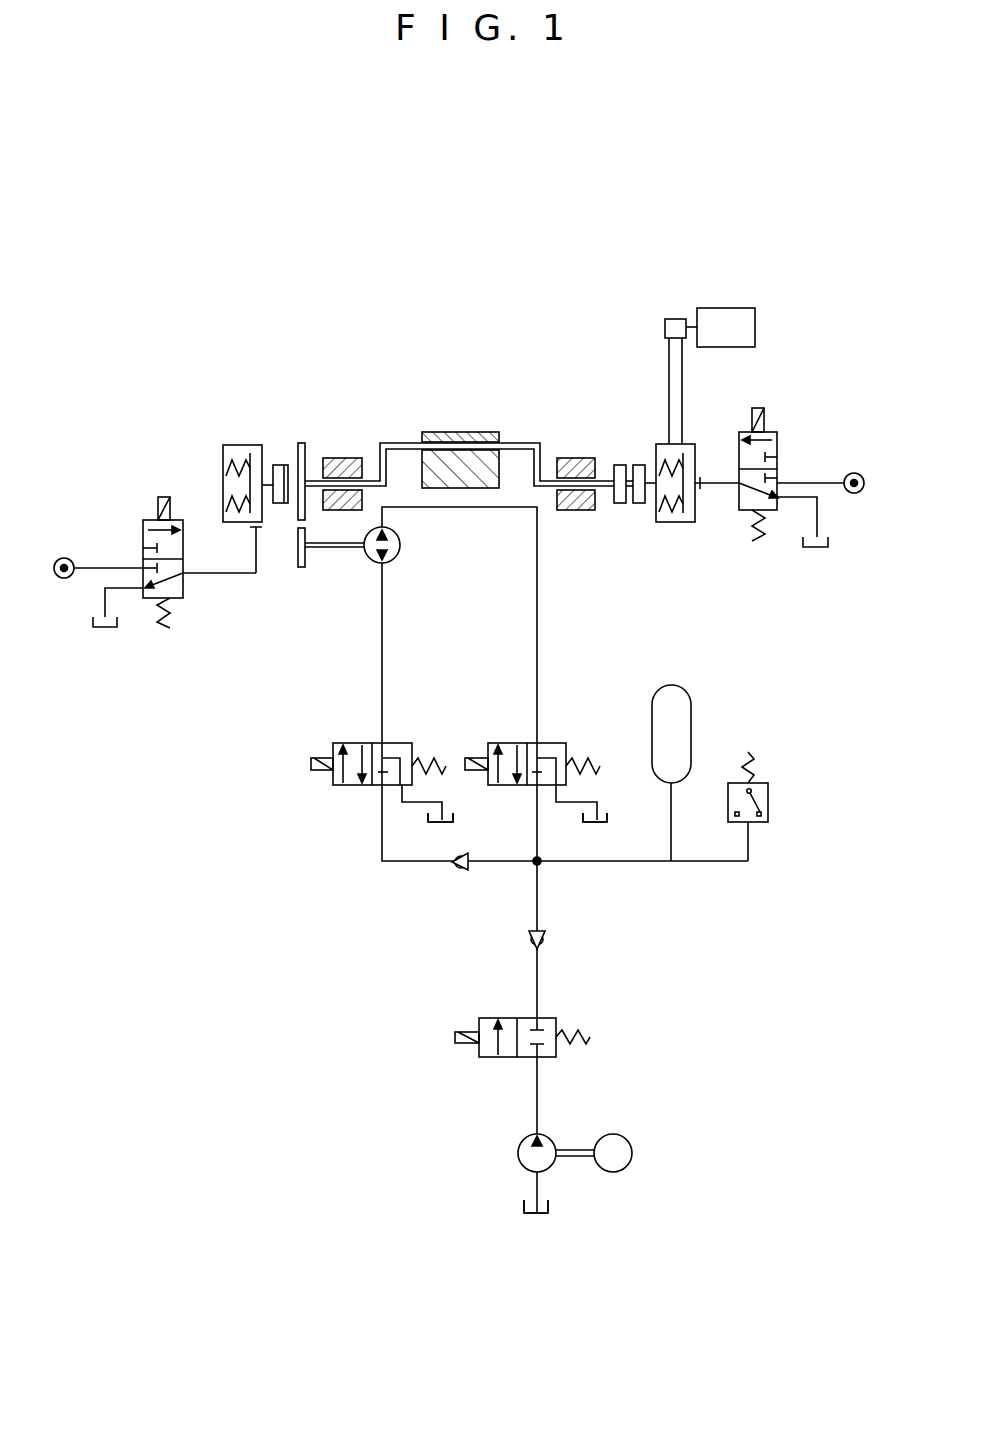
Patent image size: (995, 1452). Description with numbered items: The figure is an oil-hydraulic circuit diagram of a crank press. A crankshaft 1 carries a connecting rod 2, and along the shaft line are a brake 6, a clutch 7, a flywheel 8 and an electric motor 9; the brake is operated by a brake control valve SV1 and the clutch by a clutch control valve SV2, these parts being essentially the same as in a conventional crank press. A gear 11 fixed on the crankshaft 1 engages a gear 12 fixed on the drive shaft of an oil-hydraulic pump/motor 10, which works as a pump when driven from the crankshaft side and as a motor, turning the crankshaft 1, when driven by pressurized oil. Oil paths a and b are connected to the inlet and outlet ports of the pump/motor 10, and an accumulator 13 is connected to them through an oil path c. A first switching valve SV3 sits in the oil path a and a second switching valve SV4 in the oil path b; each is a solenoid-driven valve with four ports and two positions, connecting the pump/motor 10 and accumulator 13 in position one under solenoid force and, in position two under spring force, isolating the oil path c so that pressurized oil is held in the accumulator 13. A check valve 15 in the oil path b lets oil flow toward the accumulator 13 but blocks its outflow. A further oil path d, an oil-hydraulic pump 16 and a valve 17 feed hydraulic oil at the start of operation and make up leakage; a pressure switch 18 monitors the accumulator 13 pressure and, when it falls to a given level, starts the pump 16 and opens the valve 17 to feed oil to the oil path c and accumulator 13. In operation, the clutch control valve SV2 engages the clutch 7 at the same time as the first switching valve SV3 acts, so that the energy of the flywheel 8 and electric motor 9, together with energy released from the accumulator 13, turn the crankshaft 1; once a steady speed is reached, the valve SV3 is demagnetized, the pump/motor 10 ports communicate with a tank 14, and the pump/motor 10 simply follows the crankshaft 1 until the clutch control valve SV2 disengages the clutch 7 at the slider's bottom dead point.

The crankshaft 1 is at (520, 443).
The connecting rod 2 is at (452, 432).
The brake 6 is at (240, 445).
The clutch 7 is at (628, 460).
The flywheel 8 is at (686, 444).
The electric motor 9 is at (722, 308).
The oil-hydraulic pump/motor 10 is at (400, 545).
The gear 11 is at (300, 443).
The gear 12 is at (297, 555).
The accumulator 13 is at (691, 712).
The tank 14 is at (445, 822).
The check valve 15 is at (455, 875).
The oil-hydraulic pump 16 is at (518, 1155).
The valve 17 is at (477, 1071).
The pressure switch 18 is at (768, 800).
The brake control valve SV1 is at (158, 492).
The clutch control valve SV2 is at (787, 441).
The first switching valve SV3 is at (479, 744).
The second switching valve SV4 is at (303, 743).
The oil path a is at (537, 650).
The oil path b is at (383, 647).
The oil path c is at (585, 862).
The oil path d is at (536, 978).